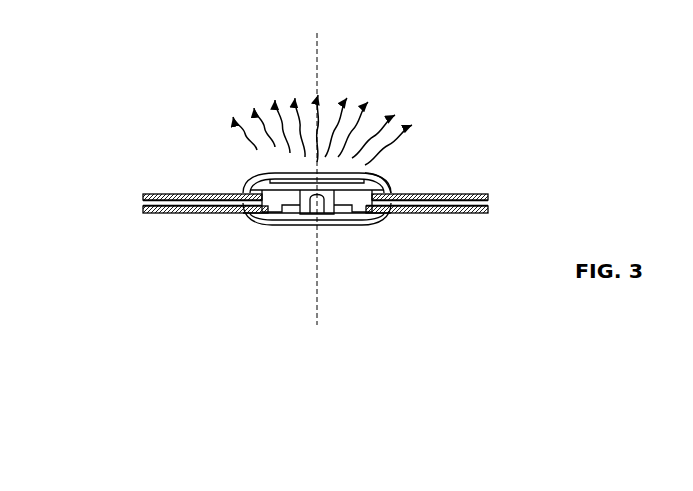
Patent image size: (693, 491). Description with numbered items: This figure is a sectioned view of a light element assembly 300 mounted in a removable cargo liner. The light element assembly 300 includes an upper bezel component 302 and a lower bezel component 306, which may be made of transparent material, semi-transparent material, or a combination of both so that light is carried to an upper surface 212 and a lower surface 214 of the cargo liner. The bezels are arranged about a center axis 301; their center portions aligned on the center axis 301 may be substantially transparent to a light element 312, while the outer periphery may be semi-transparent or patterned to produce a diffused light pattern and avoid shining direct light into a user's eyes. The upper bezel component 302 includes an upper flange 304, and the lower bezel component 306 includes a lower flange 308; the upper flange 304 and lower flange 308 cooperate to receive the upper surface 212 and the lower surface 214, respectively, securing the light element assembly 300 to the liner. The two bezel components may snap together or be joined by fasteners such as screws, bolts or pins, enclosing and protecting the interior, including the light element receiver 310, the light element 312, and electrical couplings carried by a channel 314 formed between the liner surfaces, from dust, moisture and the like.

The light element assembly 300 is at (377, 178).
The center axis 301 is at (317, 70).
The upper bezel component 302 is at (247, 190).
The upper flange 304 is at (386, 178).
The lower bezel component 306 is at (340, 226).
The lower flange 308 is at (252, 222).
The light element receiver 310 is at (328, 221).
The light element 312 is at (316, 192).
The channel 314 is at (482, 199).
The upper surface 212 is at (162, 193).
The lower surface 214 is at (466, 213).